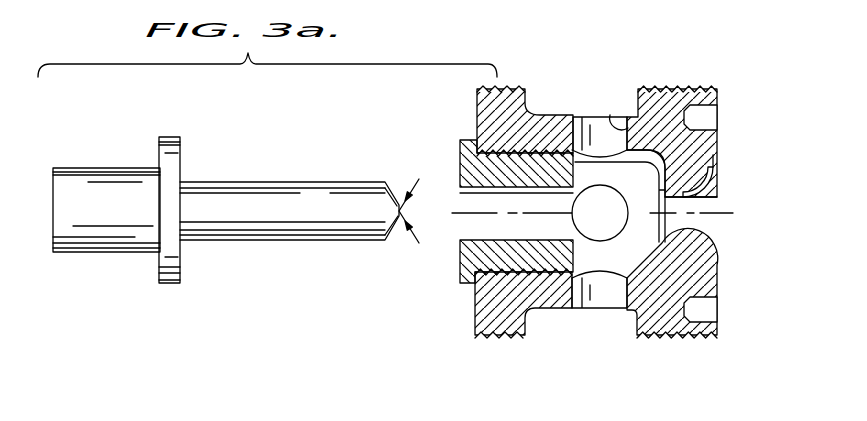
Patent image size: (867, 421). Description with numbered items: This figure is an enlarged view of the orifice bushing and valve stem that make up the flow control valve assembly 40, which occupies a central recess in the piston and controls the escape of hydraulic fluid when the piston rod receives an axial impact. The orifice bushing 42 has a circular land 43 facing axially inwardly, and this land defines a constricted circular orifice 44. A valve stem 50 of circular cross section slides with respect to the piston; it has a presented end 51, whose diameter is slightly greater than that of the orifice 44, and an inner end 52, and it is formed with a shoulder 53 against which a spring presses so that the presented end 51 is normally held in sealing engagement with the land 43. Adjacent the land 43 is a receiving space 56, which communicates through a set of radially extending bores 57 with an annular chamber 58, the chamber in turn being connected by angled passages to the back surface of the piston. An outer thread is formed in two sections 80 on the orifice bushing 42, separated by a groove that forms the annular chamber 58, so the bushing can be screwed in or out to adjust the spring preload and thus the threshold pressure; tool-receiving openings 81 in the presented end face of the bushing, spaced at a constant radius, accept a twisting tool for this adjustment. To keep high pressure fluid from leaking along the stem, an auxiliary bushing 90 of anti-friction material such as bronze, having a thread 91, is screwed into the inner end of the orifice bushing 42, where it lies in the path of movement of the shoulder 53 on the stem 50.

The flow control valve assembly 40 is at (262, 292).
The orifice bushing 42 is at (589, 190).
The circular land 43 is at (660, 193).
The constricted circular orifice 44 is at (678, 230).
The valve stem 50 is at (253, 195).
The presented end 51 is at (398, 187).
The inner end 52 is at (77, 168).
The shoulder 53 is at (170, 137).
The receiving space 56 is at (587, 253).
The radially extending bores 57 is at (613, 114).
The annular chamber 58 is at (600, 88).
The thread sections 80 is at (500, 86).
The tool-receiving openings 81 is at (712, 128).
The auxiliary bushing 90 is at (472, 143).
The thread 91 is at (503, 140).